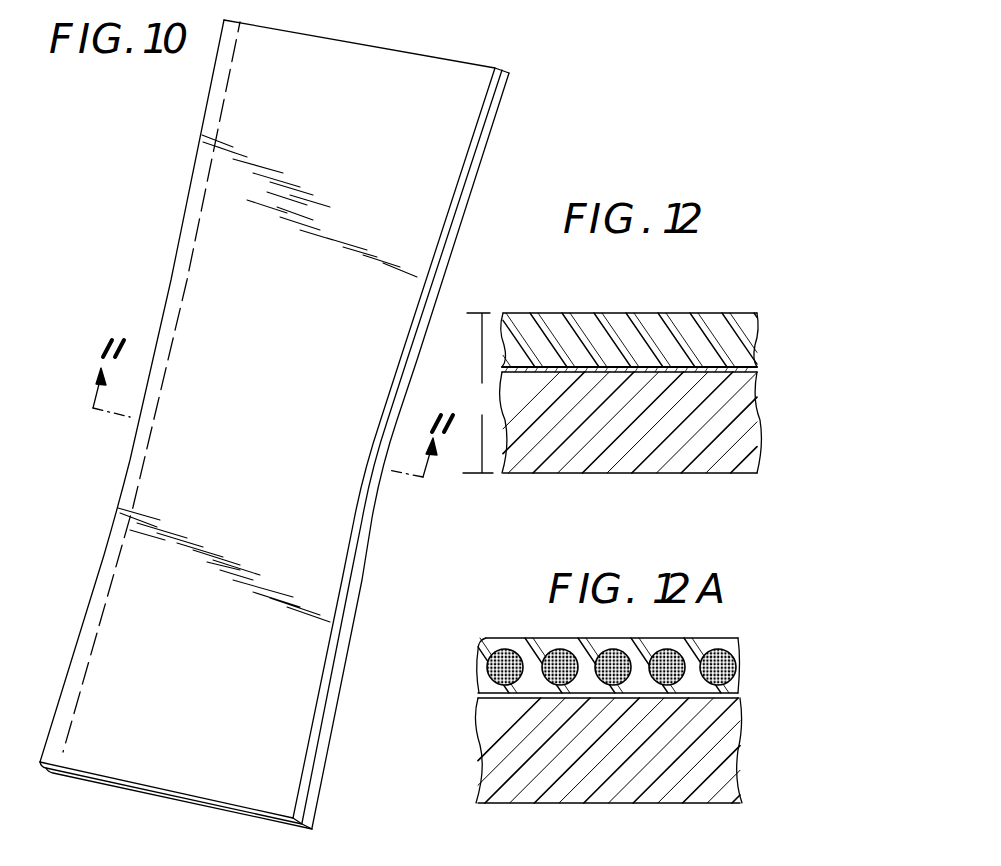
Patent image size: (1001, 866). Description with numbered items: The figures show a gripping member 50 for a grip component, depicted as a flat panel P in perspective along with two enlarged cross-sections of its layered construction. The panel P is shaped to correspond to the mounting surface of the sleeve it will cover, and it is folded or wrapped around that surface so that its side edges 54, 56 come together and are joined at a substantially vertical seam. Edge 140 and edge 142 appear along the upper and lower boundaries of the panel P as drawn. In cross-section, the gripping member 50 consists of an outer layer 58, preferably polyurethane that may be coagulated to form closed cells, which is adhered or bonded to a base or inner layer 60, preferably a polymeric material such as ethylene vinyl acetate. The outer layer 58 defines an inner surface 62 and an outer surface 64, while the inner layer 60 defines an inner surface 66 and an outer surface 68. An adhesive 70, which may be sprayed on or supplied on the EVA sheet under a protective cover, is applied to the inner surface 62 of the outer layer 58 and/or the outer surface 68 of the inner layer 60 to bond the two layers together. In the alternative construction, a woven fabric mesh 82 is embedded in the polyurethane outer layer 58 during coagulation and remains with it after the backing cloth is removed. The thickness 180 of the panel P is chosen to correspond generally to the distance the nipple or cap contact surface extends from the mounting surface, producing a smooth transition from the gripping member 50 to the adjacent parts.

In FIG. 10, the upper edge of panel 140 is at (423, 53).
In FIG. 10, the panel P is at (447, 85).
In FIG. 10, the side edge 54 is at (461, 223).
In FIG. 10, the side edge 56 is at (177, 267).
In FIG. 10, the lower edge of panel 142 is at (150, 793).
In FIG. 12, the gripping member 50 is at (597, 306).
In FIG. 12A, the gripping member 50 is at (506, 624).
In FIG. 12, the outer layer 58 is at (743, 327).
In FIG. 12A, the outer layer 58 is at (632, 645).
In FIG. 12, the inner layer 60 is at (740, 440).
In FIG. 12A, the inner layer 60 is at (725, 757).
In FIG. 12, the inner surface 62 is at (693, 371).
In FIG. 12, the outer surface 64 is at (703, 313).
In FIG. 12, the inner surface 66 is at (645, 473).
In FIG. 12, the outer surface 68 is at (558, 366).
In FIG. 12, the adhesive 70 is at (753, 368).
In FIG. 12A, the woven fabric mesh 82 is at (735, 665).
In FIG. 12, the thickness 180 is at (482, 393).